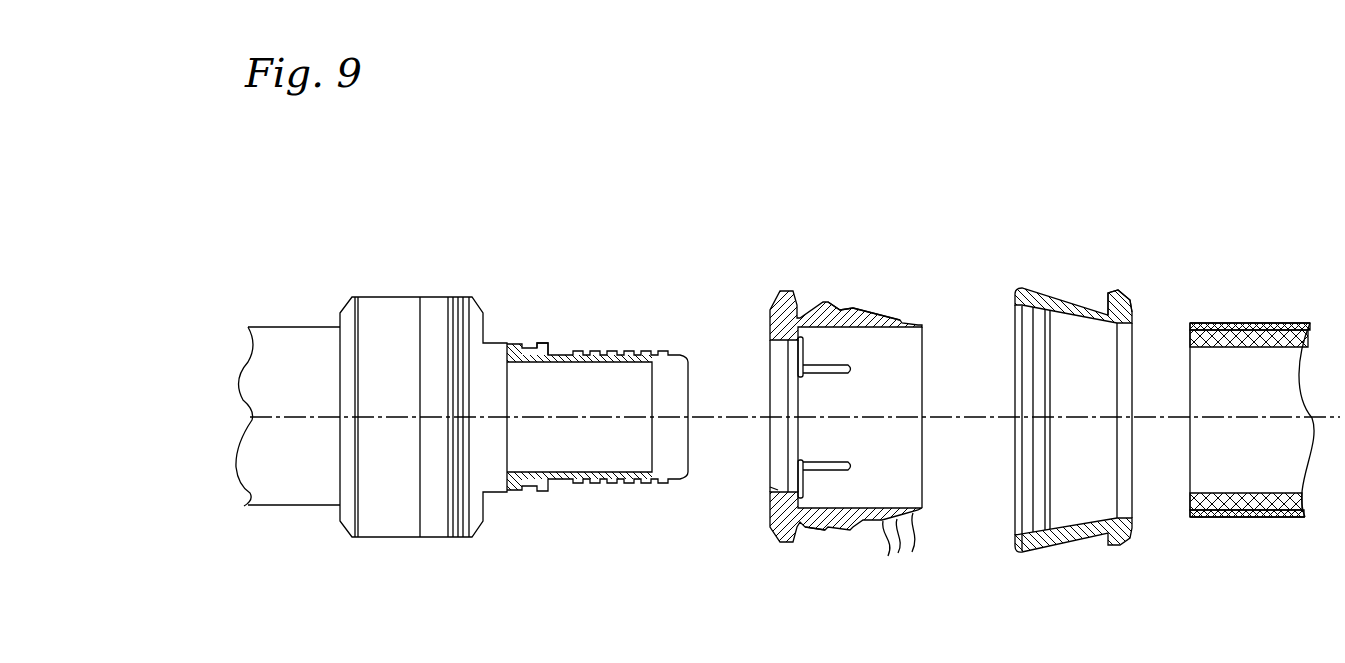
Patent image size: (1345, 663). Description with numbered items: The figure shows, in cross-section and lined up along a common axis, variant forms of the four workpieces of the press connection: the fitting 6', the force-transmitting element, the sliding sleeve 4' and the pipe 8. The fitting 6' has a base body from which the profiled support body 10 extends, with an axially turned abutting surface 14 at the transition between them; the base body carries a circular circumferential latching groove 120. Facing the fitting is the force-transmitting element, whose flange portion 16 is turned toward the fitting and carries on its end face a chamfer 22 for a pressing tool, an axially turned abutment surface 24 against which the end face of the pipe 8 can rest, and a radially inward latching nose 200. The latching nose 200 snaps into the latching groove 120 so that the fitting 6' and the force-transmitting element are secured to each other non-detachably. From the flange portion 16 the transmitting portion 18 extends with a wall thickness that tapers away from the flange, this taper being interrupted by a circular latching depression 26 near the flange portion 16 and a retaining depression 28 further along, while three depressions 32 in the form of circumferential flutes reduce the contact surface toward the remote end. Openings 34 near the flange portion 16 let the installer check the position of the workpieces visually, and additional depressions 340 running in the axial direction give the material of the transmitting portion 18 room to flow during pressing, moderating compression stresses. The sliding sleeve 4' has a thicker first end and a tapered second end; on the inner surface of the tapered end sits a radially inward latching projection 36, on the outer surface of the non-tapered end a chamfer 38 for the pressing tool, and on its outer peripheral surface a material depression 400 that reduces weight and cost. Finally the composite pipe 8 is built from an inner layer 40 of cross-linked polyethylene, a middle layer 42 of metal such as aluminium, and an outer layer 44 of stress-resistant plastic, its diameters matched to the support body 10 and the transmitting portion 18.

The fitting 6' is at (514, 334).
The support body 10 is at (638, 486).
The latching groove 120 is at (532, 488).
The abutting surface 14 is at (553, 345).
The chamfer 22 is at (772, 293).
The retaining depression 28 is at (842, 308).
The transmitting portion 18 is at (855, 310).
The openings 34 is at (802, 352).
The depressions 340 is at (832, 465).
The abutment surface 24 is at (803, 500).
The flange portion 16 is at (788, 531).
The latching nose 200 is at (770, 490).
The latching depression 26 is at (806, 534).
The depressions 32 is at (900, 548).
The sliding sleeve 4' is at (1082, 383).
The latching projection 36 is at (1040, 302).
The chamfer 38 is at (1125, 295).
The material depression 400 is at (1098, 542).
The pipe 8 is at (1248, 258).
The outer layer 44 is at (1290, 325).
The inner layer 40 is at (1303, 347).
The middle layer 42 is at (1293, 517).